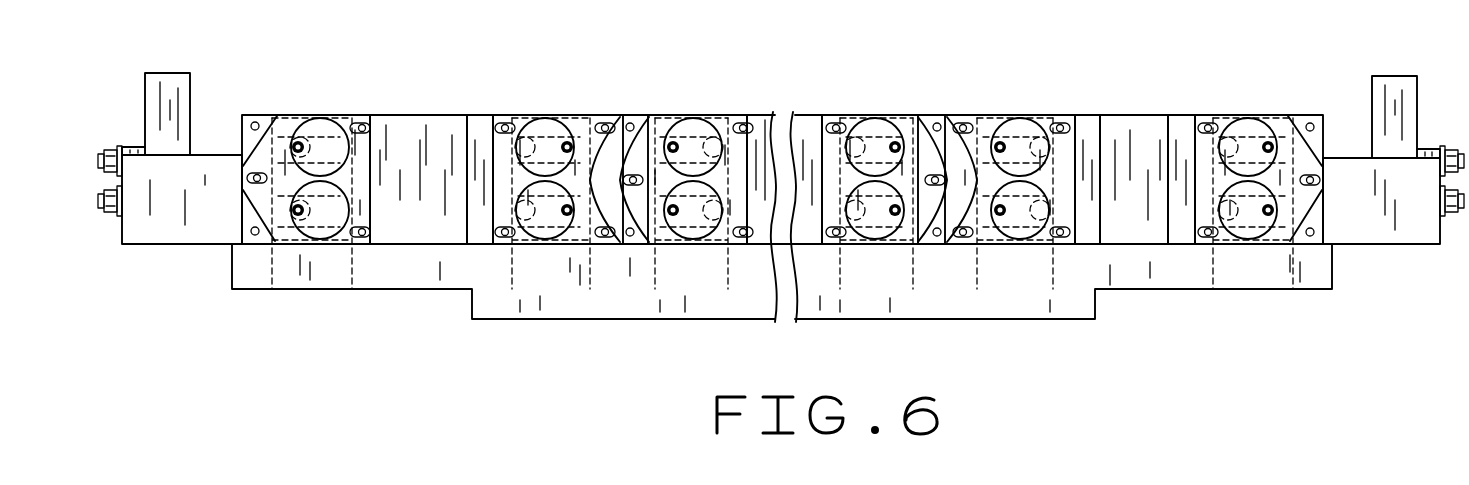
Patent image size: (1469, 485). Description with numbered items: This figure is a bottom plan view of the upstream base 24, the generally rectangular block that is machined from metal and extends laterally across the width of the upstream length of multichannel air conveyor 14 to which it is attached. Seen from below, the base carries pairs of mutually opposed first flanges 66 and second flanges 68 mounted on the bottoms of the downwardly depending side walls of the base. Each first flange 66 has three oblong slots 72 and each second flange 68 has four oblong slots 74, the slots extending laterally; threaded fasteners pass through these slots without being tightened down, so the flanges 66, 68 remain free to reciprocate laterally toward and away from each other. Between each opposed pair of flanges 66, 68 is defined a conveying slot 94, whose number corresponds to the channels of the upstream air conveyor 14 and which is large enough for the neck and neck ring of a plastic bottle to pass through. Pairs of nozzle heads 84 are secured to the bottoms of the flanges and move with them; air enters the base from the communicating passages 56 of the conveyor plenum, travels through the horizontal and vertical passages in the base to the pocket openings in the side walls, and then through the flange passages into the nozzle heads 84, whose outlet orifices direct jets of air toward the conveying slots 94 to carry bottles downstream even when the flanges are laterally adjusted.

The upstream length of multichannel air conveyor 14 is at (1320, 270).
The upstream base 24 is at (1140, 140).
The communicating passages of the plenum 56 is at (352, 262).
The first flange 66 is at (383, 210).
The second flange 68 is at (480, 215).
The oblong slots 72 is at (352, 118).
The oblong slots 74 is at (505, 118).
The nozzle heads 84 is at (300, 118).
The conveying slots 94 is at (428, 106).